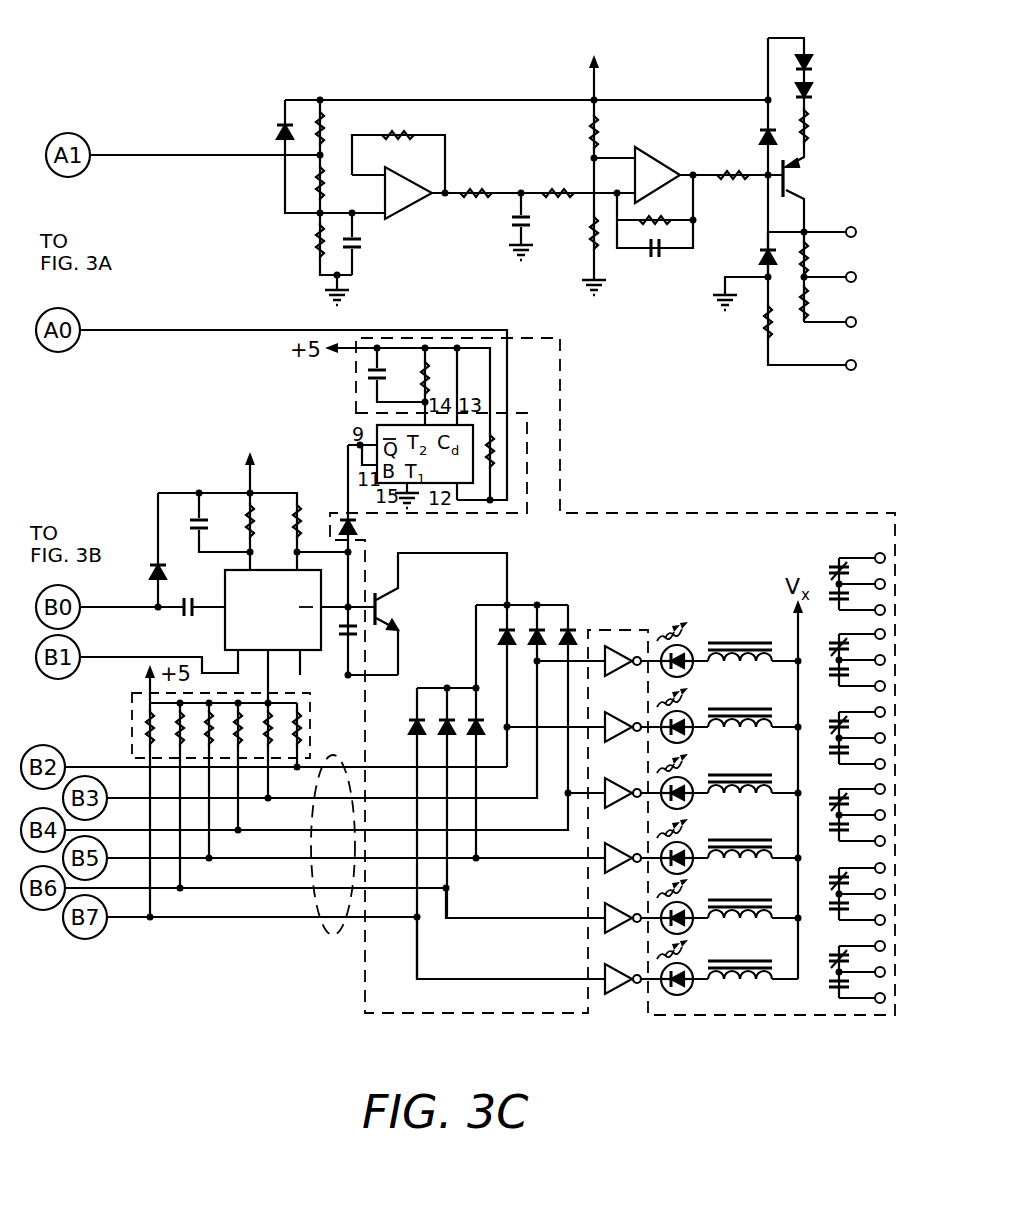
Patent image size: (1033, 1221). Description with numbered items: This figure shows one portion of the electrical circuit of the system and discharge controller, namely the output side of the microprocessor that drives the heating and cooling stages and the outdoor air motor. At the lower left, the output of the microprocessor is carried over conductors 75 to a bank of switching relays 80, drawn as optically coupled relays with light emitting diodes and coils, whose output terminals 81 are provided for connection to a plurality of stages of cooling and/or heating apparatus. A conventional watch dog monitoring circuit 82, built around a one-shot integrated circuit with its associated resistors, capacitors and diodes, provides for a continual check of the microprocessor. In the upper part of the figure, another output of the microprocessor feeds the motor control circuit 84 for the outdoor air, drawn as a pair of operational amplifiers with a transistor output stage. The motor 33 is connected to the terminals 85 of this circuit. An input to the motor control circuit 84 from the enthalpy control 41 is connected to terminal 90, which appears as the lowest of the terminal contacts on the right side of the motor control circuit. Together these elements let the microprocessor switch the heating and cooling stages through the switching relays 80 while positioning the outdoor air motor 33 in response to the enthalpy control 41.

The motor control circuit 84 is at (532, 155).
The terminals 85 is at (850, 215).
The motor 33 is at (903, 296).
The enthalpy control 41 is at (893, 403).
The terminal 90 is at (846, 371).
The watch dog monitoring circuit 82 is at (335, 488).
The output terminals 81 is at (870, 513).
The switching relays 80 is at (742, 625).
The conductors 75 is at (325, 930).